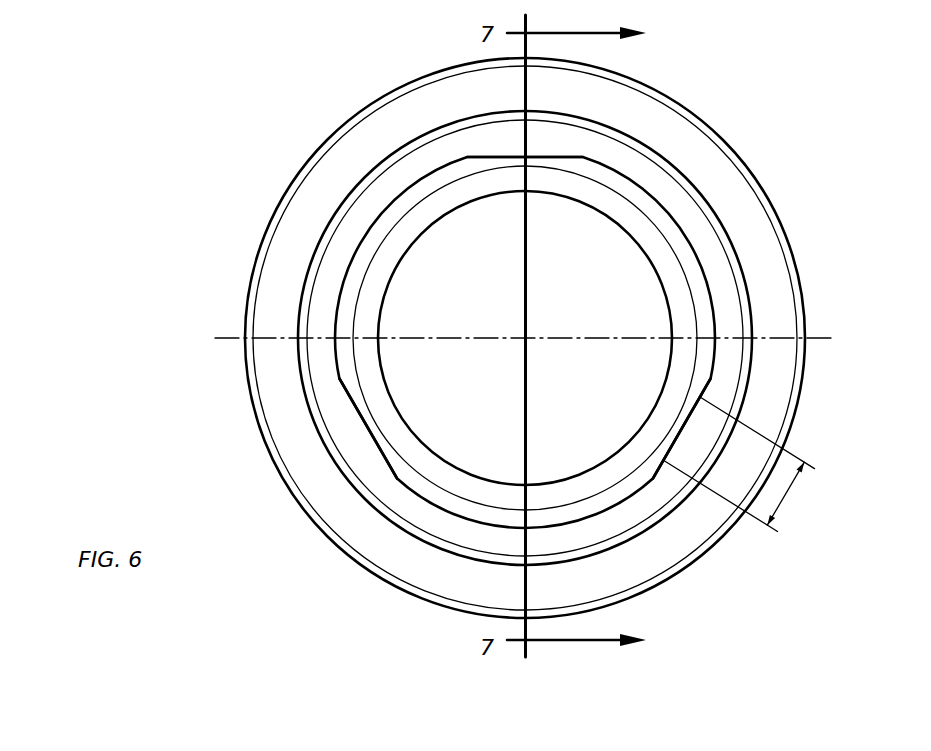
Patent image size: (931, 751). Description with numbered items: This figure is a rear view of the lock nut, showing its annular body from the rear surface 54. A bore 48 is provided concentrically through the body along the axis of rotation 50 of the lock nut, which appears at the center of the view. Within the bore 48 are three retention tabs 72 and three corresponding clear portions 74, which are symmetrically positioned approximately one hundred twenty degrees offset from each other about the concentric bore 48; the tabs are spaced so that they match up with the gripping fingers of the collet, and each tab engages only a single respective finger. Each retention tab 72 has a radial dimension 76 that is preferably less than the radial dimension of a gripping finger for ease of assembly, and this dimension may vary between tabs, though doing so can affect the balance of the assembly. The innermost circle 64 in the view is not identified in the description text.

The bore 48 is at (583, 163).
The axis of rotation 50 is at (525, 336).
The rear surface 54 is at (710, 152).
The inner bore 64 is at (630, 455).
The retention tabs 72 is at (498, 152).
The clear portions 74 is at (683, 243).
The radial dimension 76 is at (788, 494).